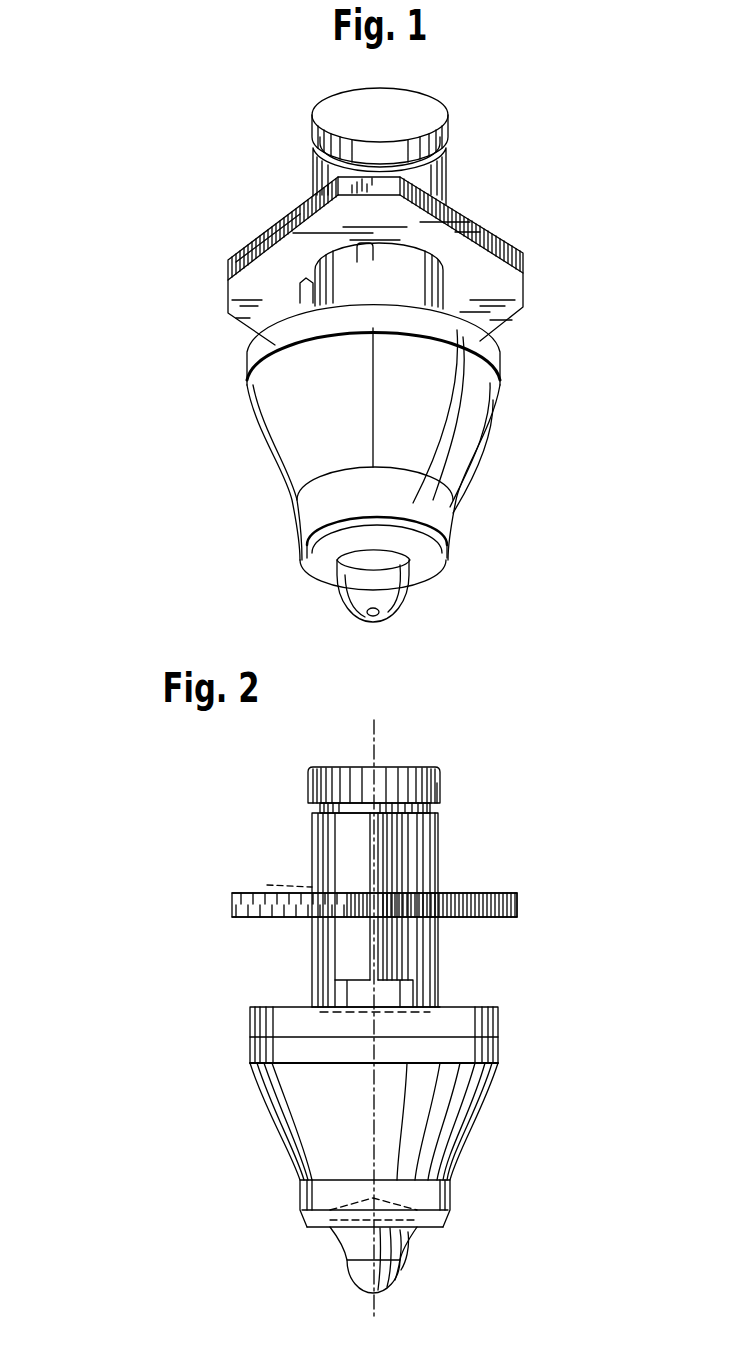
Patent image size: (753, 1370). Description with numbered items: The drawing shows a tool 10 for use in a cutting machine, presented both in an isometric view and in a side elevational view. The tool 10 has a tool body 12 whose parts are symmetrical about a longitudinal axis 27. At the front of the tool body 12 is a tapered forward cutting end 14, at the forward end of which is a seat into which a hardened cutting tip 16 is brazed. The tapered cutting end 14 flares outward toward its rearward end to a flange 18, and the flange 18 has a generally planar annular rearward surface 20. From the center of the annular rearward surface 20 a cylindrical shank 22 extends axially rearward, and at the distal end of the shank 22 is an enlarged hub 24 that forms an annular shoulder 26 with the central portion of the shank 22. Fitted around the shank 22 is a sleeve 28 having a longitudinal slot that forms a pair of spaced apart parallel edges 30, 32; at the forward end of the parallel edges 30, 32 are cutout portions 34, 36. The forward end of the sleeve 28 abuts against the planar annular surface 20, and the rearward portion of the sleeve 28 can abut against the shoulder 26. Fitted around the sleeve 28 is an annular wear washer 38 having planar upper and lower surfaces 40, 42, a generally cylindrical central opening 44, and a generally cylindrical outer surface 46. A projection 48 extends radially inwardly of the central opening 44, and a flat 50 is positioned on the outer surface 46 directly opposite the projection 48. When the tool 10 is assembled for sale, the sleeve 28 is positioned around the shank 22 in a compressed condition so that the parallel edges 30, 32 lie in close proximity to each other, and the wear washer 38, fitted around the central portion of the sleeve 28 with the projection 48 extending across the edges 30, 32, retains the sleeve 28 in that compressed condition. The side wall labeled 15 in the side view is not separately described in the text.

In FIG. 1, the tool 10 is at (182, 315).
In FIG. 2, the tool 10 is at (527, 1110).
In FIG. 1, the tool body 12 is at (228, 422).
In FIG. 2, the tool body 12 is at (278, 1170).
In FIG. 1, the tapered forward cutting end 14 is at (272, 468).
In FIG. 2, the tapered forward cutting end 14 is at (463, 1143).
In FIG. 2, the body side wall 15 is at (278, 1115).
In FIG. 1, the hardened cutting tip 16 is at (350, 597).
In FIG. 2, the hardened cutting tip 16 is at (410, 1248).
In FIG. 1, the flange 18 is at (494, 367).
In FIG. 2, the flange 18 is at (498, 1047).
In FIG. 2, the annular rearward surface 20 is at (487, 1005).
In FIG. 2, the cylindrical shank 22 is at (322, 805).
In FIG. 1, the enlarged hub 24 is at (433, 105).
In FIG. 2, the enlarged hub 24 is at (308, 775).
In FIG. 2, the annular shoulder 26 is at (438, 805).
In FIG. 2, the longitudinal axis 27 is at (372, 1316).
In FIG. 1, the sleeve 28 is at (460, 180).
In FIG. 2, the sleeve 28 is at (292, 860).
In FIG. 1, the parallel edge 30 is at (343, 150).
In FIG. 2, the parallel edge 30 is at (380, 832).
In FIG. 1, the parallel edge 32 is at (311, 170).
In FIG. 2, the parallel edge 32 is at (380, 860).
In FIG. 2, the cutout portion 34 is at (407, 980).
In FIG. 2, the cutout portion 36 is at (347, 993).
In FIG. 1, the annular wear washer 38 is at (550, 254).
In FIG. 2, the annular wear washer 38 is at (210, 888).
In FIG. 1, the upper surface 40 is at (243, 287).
In FIG. 2, the upper surface 40 is at (503, 918).
In FIG. 2, the lower surface 42 is at (495, 893).
In FIG. 1, the central opening 44 is at (443, 283).
In FIG. 1, the outer surface 46 is at (268, 240).
In FIG. 2, the outer surface 46 is at (517, 907).
In FIG. 1, the projection 48 is at (357, 258).
In FIG. 2, the projection 48 is at (275, 878).
In FIG. 1, the flat 50 is at (503, 323).